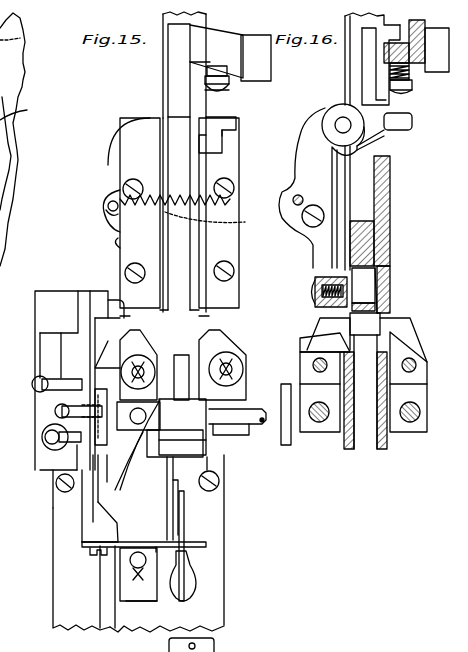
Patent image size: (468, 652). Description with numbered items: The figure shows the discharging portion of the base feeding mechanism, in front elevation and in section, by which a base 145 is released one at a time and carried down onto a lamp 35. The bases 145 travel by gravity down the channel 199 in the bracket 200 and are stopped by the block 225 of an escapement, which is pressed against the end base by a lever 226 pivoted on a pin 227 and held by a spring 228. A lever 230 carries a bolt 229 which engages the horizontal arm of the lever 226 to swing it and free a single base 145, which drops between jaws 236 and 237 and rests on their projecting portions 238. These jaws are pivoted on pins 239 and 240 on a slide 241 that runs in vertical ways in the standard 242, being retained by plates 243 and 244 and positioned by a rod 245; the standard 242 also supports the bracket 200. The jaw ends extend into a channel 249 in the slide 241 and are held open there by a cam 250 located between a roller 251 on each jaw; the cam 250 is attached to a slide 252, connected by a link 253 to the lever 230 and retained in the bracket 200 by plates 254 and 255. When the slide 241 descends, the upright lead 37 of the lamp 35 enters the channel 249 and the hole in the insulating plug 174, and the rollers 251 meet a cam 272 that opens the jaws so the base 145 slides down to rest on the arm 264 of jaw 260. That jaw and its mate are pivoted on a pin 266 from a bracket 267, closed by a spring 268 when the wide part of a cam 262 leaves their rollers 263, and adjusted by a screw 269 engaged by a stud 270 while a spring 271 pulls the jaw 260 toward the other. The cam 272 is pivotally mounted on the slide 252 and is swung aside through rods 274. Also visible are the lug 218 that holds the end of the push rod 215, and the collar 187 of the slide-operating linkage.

In FIG. 15, the lug 218 is at (0, 76).
In FIG. 15, the push rod 215 is at (27, 111).
In FIG. 15, the link 253 is at (162, 68).
In FIG. 15, the slide 252 is at (165, 124).
In FIG. 15, the lever 230 is at (226, 28).
In FIG. 16, the lever 230 is at (418, 28).
In FIG. 15, the bolt 229 is at (223, 88).
In FIG. 16, the bolt 229 is at (411, 93).
In FIG. 15, the plate 254 is at (126, 229).
In FIG. 15, the lever 226 is at (125, 136).
In FIG. 16, the lever 226 is at (311, 246).
In FIG. 15, the spring 228 is at (195, 214).
In FIG. 15, the plate 255 is at (238, 244).
In FIG. 15, the bracket 267 is at (35, 300).
In FIG. 15, the spring 271 is at (33, 382).
In FIG. 15, the spring 268 is at (55, 410).
In FIG. 15, the screw 269 is at (42, 432).
In FIG. 15, the stud 270 is at (45, 440).
In FIG. 15, the rollers 263 is at (100, 389).
In FIG. 15, the pin 266 is at (125, 314).
In FIG. 15, the roller 251 is at (136, 356).
In FIG. 15, the cam 250 is at (214, 340).
In FIG. 15, the slide 241 is at (240, 392).
In FIG. 16, the slide 241 is at (346, 446).
In FIG. 15, the rods 274 is at (232, 426).
In FIG. 15, the cam 262 is at (119, 456).
In FIG. 16, the cam 262 is at (286, 446).
In FIG. 15, the cam 272 is at (222, 472).
In FIG. 15, the jaw 260 is at (82, 517).
In FIG. 15, the standard 242 is at (30, 529).
In FIG. 15, the plate 243 is at (53, 592).
In FIG. 15, the rod 245 is at (110, 628).
In FIG. 15, the plate 244 is at (206, 541).
In FIG. 15, the lead 37 is at (185, 514).
In FIG. 15, the arm 264 is at (190, 558).
In FIG. 15, the lamp 35 is at (200, 587).
In FIG. 15, the collar 187 is at (214, 644).
In FIG. 16, the pin 227 is at (338, 118).
In FIG. 16, the bracket 200 is at (392, 190).
In FIG. 16, the channel 199 is at (390, 268).
In FIG. 16, the insulating plug 174 is at (392, 287).
In FIG. 16, the base 145 is at (388, 318).
In FIG. 16, the block 225 is at (326, 308).
In FIG. 16, the jaw 236 is at (306, 344).
In FIG. 16, the jaw 237 is at (398, 336).
In FIG. 16, the projecting portions 238 is at (385, 352).
In FIG. 16, the channel 249 is at (368, 440).
In FIG. 16, the pin 239 is at (318, 424).
In FIG. 16, the pin 240 is at (410, 424).